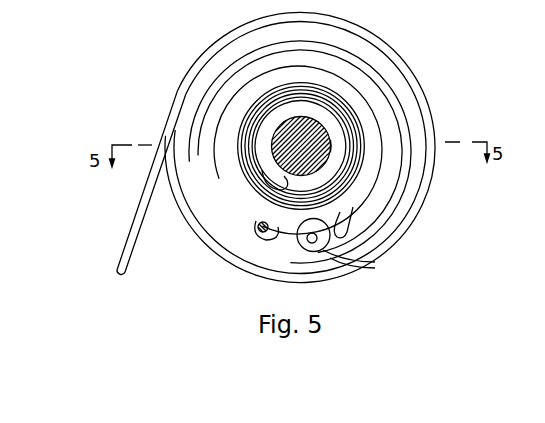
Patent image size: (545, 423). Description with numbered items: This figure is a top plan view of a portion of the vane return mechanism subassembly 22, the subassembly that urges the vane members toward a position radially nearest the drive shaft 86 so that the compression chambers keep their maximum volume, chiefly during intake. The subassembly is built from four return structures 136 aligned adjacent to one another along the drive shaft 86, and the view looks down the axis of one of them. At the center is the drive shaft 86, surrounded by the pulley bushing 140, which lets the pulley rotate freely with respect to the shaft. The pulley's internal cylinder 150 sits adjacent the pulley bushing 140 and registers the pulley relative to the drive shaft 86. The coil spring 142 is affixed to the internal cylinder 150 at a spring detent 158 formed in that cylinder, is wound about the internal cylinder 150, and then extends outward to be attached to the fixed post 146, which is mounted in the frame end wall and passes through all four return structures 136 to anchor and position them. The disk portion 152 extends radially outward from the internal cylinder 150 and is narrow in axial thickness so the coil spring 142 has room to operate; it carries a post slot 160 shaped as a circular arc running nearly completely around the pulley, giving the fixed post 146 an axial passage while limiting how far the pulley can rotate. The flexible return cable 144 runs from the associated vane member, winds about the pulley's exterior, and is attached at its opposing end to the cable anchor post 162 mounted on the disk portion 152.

The vane return mechanism subassembly 22 is at (437, 75).
The drive shaft 86 is at (290, 124).
The return structure 136 is at (455, 110).
The pulley bushing 140 is at (333, 145).
The coil spring 142 is at (322, 83).
The return cable 144 is at (146, 221).
The fixed post 146 is at (258, 236).
The internal cylinder 150 is at (343, 163).
The disk portion 152 is at (353, 212).
The spring detent 158 is at (272, 178).
The post slot 160 is at (392, 172).
The cable anchor post 162 is at (318, 242).